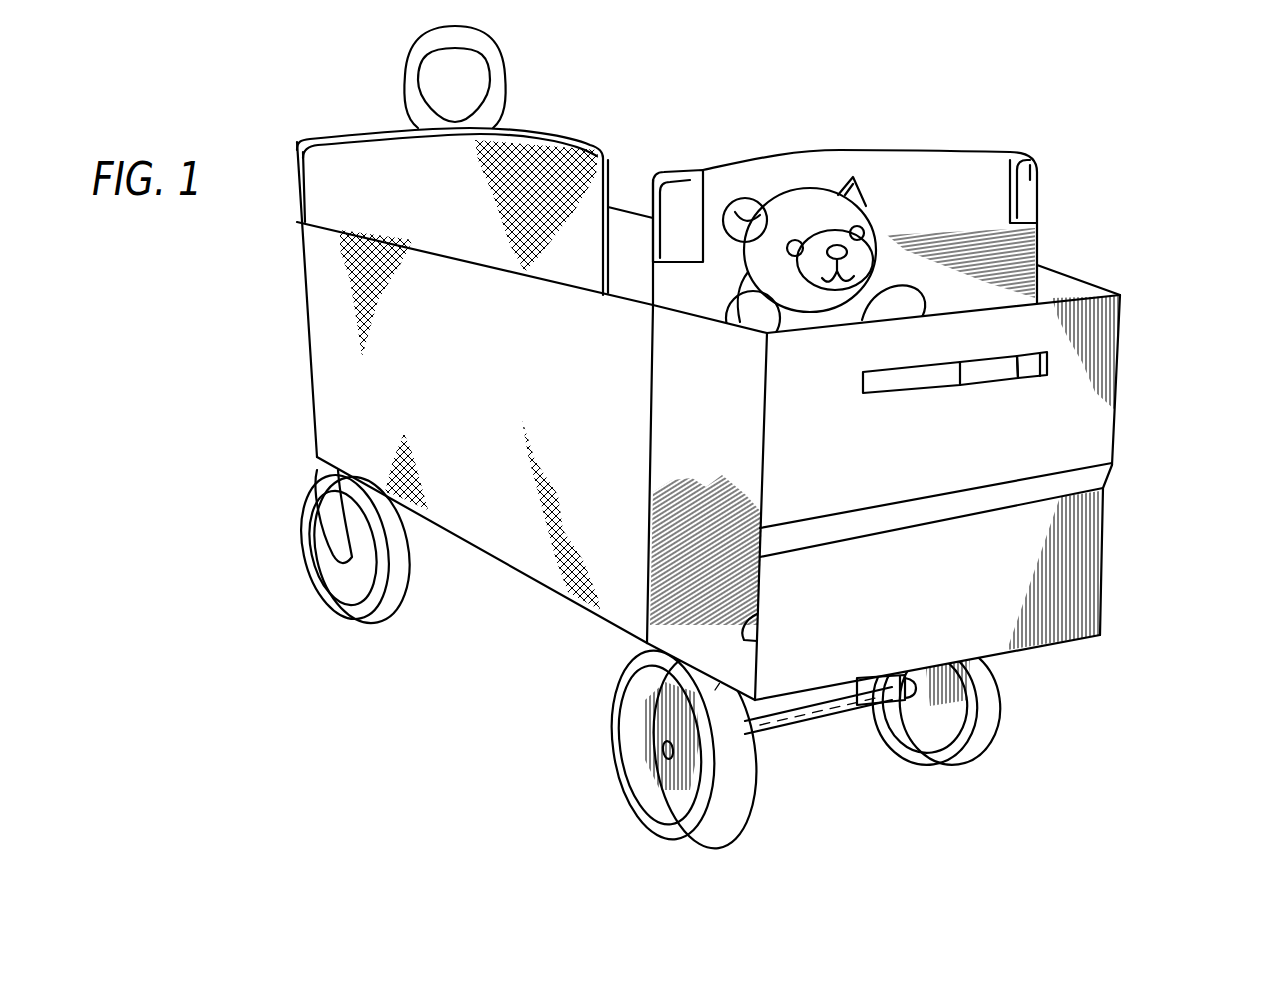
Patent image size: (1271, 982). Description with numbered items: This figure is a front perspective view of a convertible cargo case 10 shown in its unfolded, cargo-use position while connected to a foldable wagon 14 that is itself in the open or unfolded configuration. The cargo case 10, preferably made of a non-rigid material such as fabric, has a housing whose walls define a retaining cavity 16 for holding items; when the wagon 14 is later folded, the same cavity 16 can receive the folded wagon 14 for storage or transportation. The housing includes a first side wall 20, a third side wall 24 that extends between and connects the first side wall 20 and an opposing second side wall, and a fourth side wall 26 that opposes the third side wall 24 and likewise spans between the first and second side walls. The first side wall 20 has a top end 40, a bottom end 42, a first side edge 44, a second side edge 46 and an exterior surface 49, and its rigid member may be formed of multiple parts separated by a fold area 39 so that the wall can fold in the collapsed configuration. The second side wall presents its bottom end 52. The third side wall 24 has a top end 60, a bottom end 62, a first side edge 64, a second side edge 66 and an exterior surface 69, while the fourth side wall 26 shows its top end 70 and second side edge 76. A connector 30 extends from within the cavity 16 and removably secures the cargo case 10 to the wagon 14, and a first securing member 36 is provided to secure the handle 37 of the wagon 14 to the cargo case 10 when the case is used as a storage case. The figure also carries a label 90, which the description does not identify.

The convertible cargo case 10 is at (744, 457).
The wagon 14 is at (466, 189).
The retaining cavity 16 is at (989, 276).
The first side wall 20 is at (983, 489).
The third side wall 24 is at (504, 434).
The fourth side wall 26 is at (1170, 369).
The connector 30 is at (897, 219).
The first securing member 36 is at (1032, 391).
The handle 37 is at (408, 77).
The fold area 39 is at (931, 522).
The top end 40 is at (864, 349).
The bottom end 42 is at (830, 742).
The first side edge 44 is at (782, 617).
The second side edge 46 is at (1143, 550).
The exterior surface 49 is at (949, 595).
The bottom end 52 is at (640, 671).
The top end 60 is at (793, 221).
The bottom end 62 is at (684, 749).
The first side edge 64 is at (743, 516).
The second side edge 66 is at (670, 411).
The exterior surface 69 is at (627, 745).
The top end 70 is at (1092, 244).
The second side edge 76 is at (1129, 353).
The top edge of back panel 90 is at (859, 112).